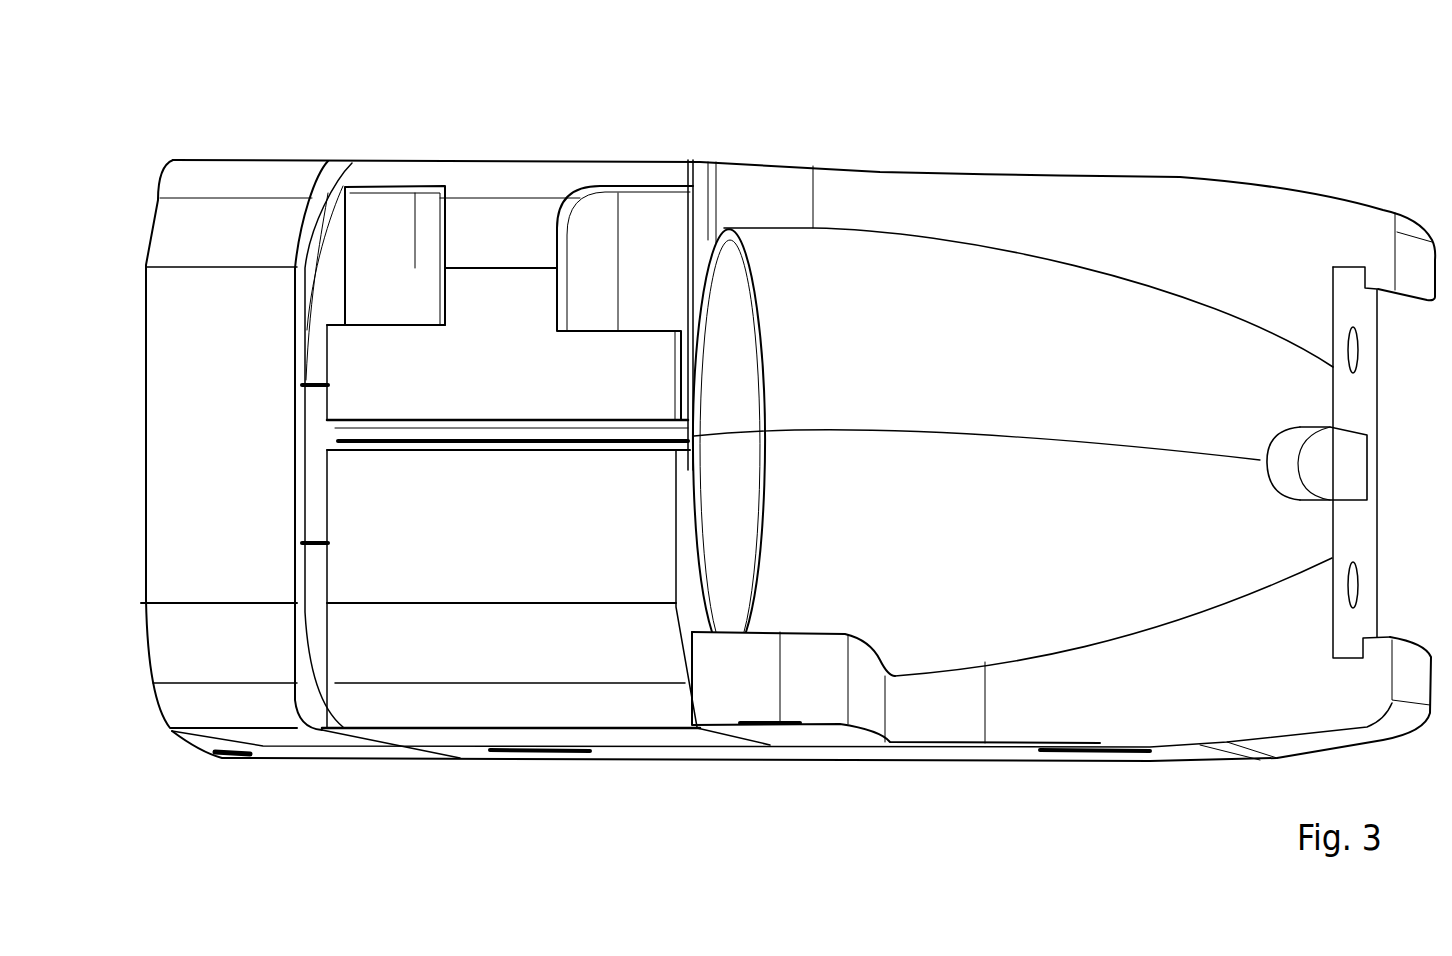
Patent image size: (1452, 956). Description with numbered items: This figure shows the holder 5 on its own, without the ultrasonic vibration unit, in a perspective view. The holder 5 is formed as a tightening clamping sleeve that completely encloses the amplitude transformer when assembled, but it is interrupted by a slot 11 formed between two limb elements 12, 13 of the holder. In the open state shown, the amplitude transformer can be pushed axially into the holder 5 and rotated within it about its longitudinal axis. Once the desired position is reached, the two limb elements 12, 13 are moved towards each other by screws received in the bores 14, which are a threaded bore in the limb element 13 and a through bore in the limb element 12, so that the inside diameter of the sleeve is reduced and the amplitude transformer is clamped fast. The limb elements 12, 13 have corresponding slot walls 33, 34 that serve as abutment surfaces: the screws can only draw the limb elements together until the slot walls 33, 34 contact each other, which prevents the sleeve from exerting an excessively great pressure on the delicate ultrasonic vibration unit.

The holder 5 is at (995, 220).
The slot 11 is at (1250, 457).
The limb element 12 is at (507, 344).
The limb element 13 is at (511, 589).
The bore 14 is at (388, 320).
The slot wall 33 is at (350, 425).
The slot wall 34 is at (620, 457).